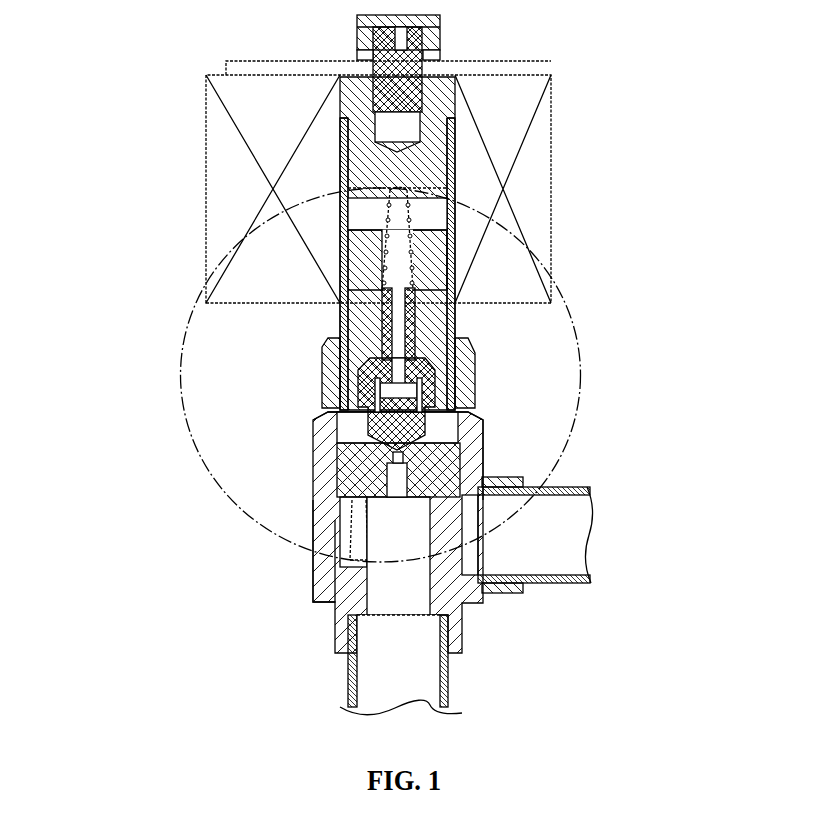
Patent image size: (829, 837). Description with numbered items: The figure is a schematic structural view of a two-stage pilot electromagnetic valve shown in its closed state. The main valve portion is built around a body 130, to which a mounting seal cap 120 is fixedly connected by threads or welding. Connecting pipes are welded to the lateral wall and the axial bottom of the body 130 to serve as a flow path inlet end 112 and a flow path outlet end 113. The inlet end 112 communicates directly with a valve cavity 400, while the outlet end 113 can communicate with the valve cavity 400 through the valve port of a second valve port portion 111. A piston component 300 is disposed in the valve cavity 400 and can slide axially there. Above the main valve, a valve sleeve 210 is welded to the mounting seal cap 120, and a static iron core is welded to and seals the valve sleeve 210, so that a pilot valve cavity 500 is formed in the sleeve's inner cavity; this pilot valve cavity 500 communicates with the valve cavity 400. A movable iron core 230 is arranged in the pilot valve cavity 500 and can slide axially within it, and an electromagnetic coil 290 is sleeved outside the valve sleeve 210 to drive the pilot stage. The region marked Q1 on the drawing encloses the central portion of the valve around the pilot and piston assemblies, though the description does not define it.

The second valve port portion 111 is at (432, 498).
The flow path inlet end 112 is at (567, 538).
The flow path outlet end 113 is at (393, 602).
The mounting seal cap 120 is at (323, 378).
The body 130 is at (315, 523).
The valve sleeve 210 is at (452, 283).
The movable iron core 230 is at (358, 270).
The electromagnetic coil 290 is at (235, 175).
The piston component 300 is at (457, 472).
The valve cavity 400 is at (327, 440).
The pilot valve cavity 500 is at (357, 213).
The detail region Q1 is at (573, 312).